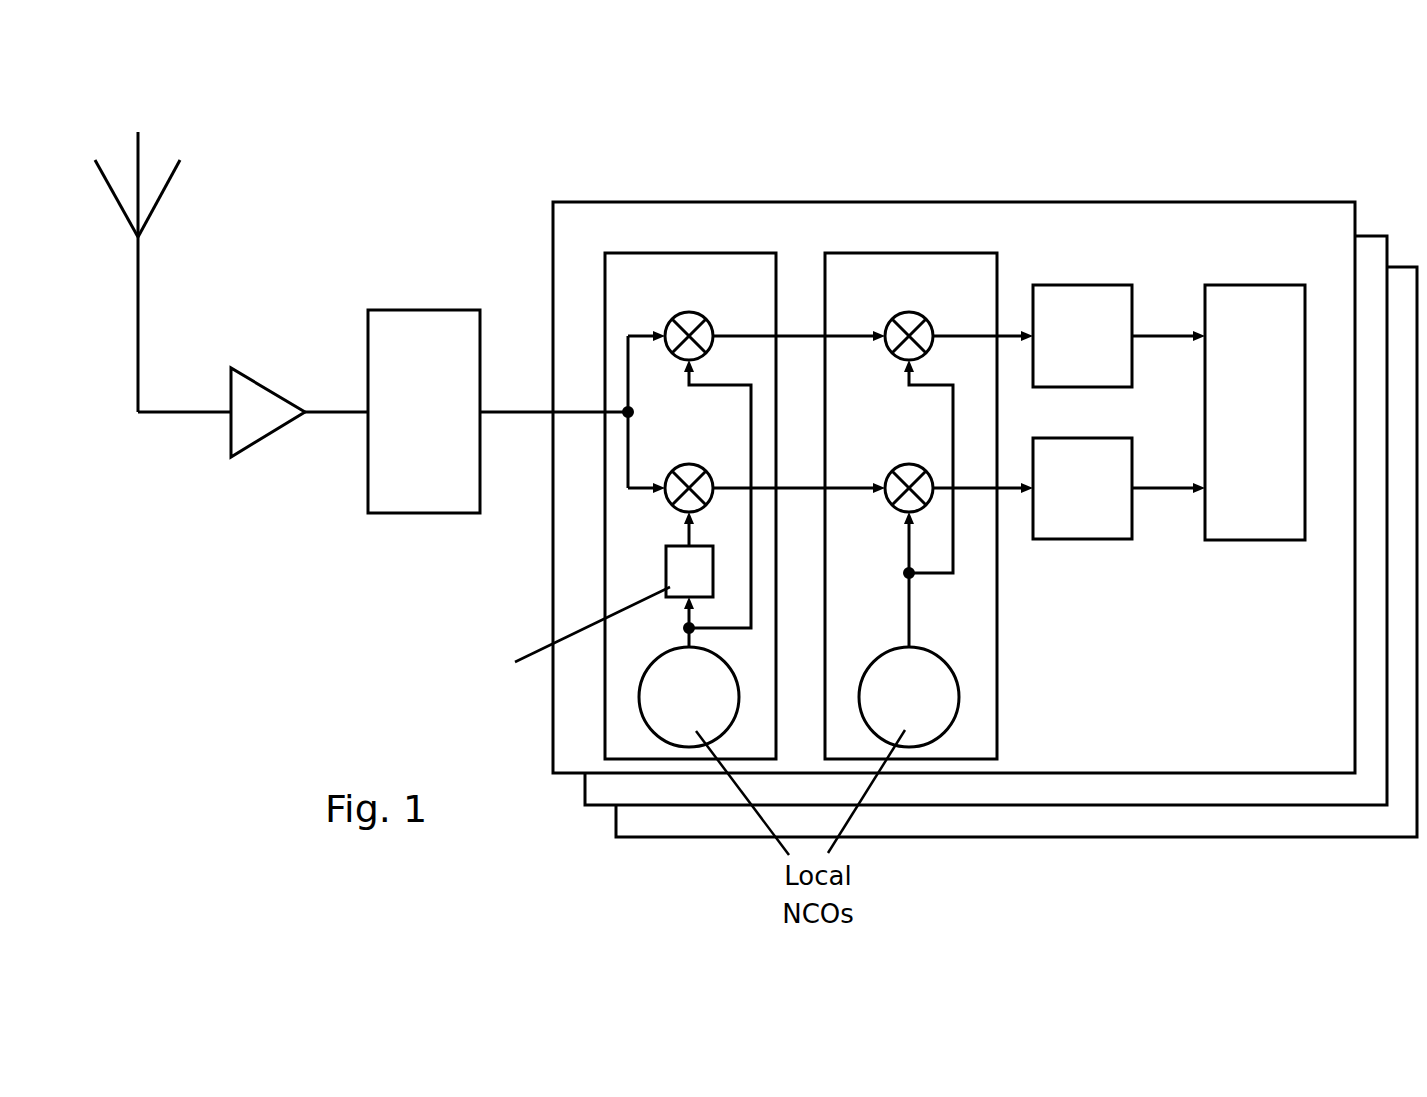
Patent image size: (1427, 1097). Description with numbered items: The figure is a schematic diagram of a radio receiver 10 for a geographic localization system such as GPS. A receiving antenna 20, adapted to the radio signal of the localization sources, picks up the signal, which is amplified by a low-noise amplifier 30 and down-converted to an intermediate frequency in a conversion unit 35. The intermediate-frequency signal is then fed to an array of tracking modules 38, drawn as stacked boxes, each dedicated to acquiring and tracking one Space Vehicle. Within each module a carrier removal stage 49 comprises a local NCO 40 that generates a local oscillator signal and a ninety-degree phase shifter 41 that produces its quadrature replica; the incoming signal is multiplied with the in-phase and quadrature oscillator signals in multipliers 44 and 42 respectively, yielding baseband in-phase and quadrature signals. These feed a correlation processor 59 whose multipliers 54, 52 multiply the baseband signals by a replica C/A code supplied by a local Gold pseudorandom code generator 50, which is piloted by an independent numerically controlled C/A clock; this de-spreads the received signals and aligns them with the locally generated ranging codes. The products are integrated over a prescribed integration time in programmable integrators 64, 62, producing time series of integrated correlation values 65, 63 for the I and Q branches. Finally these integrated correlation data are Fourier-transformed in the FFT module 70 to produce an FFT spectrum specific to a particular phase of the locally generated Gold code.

The radio receiver 10 is at (300, 678).
The receiving antenna 20 is at (140, 162).
The low-noise amplifier 30 is at (252, 400).
The conversion unit 35 is at (445, 325).
The tracking module 38 is at (1300, 222).
The local NCO 40 is at (670, 660).
The 90° phase shifter 41 is at (675, 568).
The multiplier 42 is at (690, 475).
The multiplier 44 is at (705, 330).
The carrier removal stage 49 is at (720, 268).
The local Gold pseudorandom code generator 50 is at (890, 660).
The multiplier 52 is at (908, 475).
The multiplier 54 is at (925, 330).
The correlation processor 59 is at (940, 268).
The programmable integrator 62 is at (1097, 533).
The integrated correlation values 63 is at (1172, 485).
The programmable integrator 64 is at (1093, 293).
The integrated correlation values 65 is at (1172, 333).
The FFT module 70 is at (1250, 293).